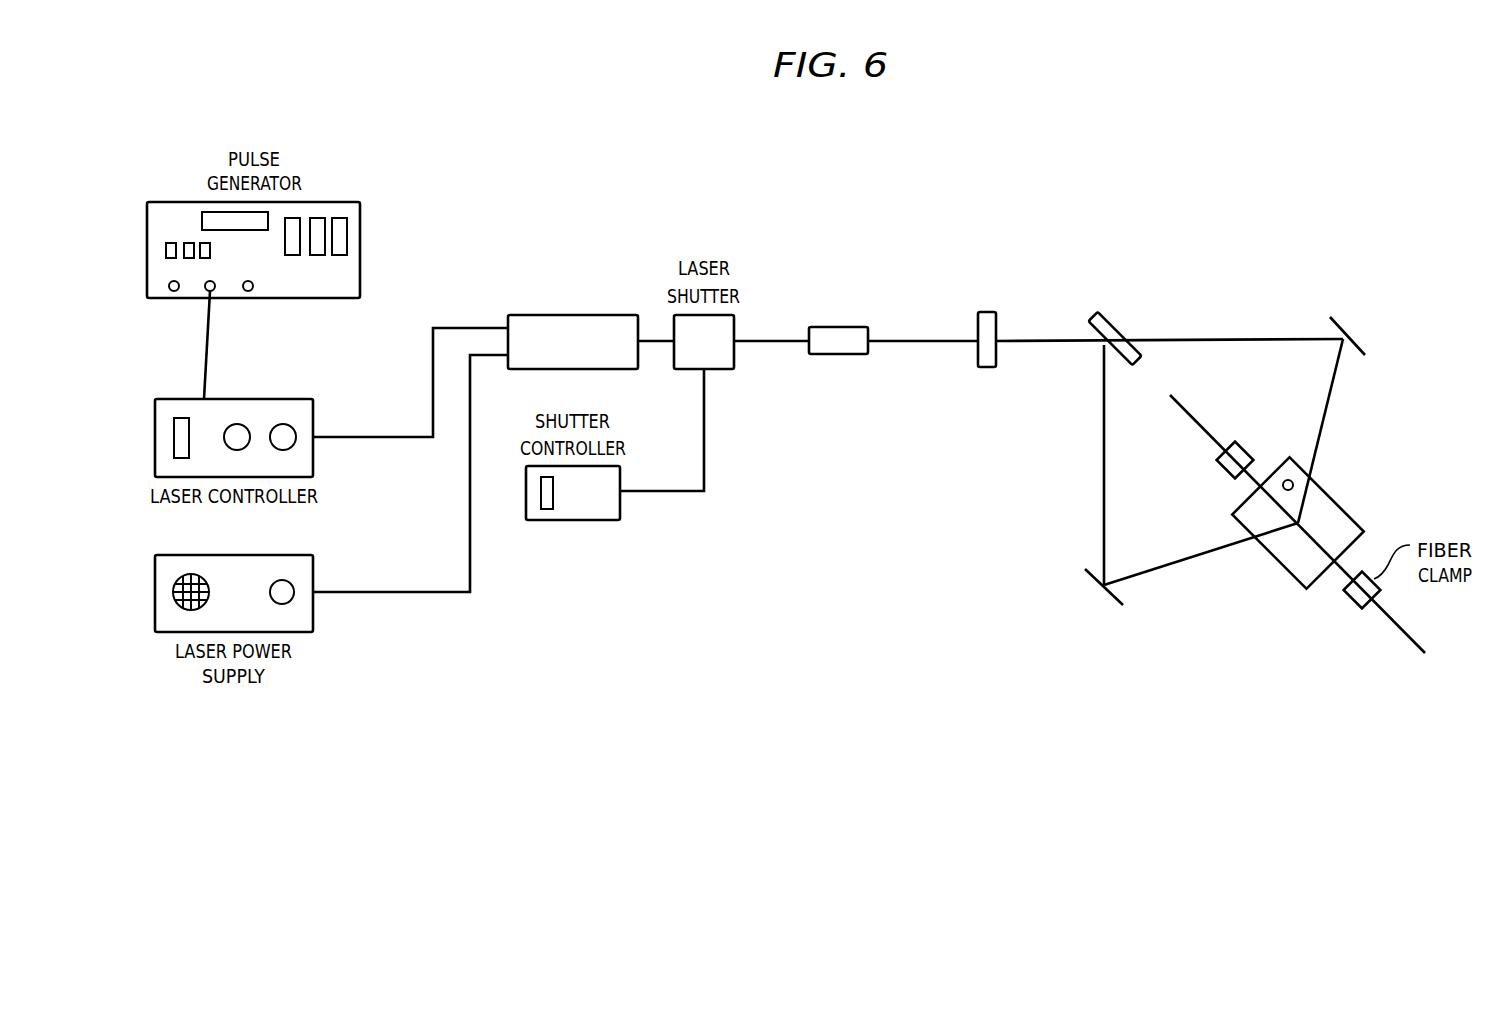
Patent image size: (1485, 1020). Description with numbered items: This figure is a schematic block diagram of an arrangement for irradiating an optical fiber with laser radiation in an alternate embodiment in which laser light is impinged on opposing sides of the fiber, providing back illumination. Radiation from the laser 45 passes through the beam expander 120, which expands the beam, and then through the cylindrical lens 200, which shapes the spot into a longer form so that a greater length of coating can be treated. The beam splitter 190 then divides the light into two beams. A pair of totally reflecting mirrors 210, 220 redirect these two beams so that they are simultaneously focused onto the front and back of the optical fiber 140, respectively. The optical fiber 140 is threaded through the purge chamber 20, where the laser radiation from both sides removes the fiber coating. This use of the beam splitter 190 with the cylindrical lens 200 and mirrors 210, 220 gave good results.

The laser 45 is at (630, 370).
The beam expander 120 is at (840, 355).
The cylindrical lens 200 is at (986, 312).
The beam splitter 190 is at (1118, 318).
The totally reflecting mirror 210 is at (1340, 321).
The totally reflecting mirror 220 is at (1083, 580).
The purge chamber 20 is at (1326, 495).
The optical fiber 140 is at (1393, 628).